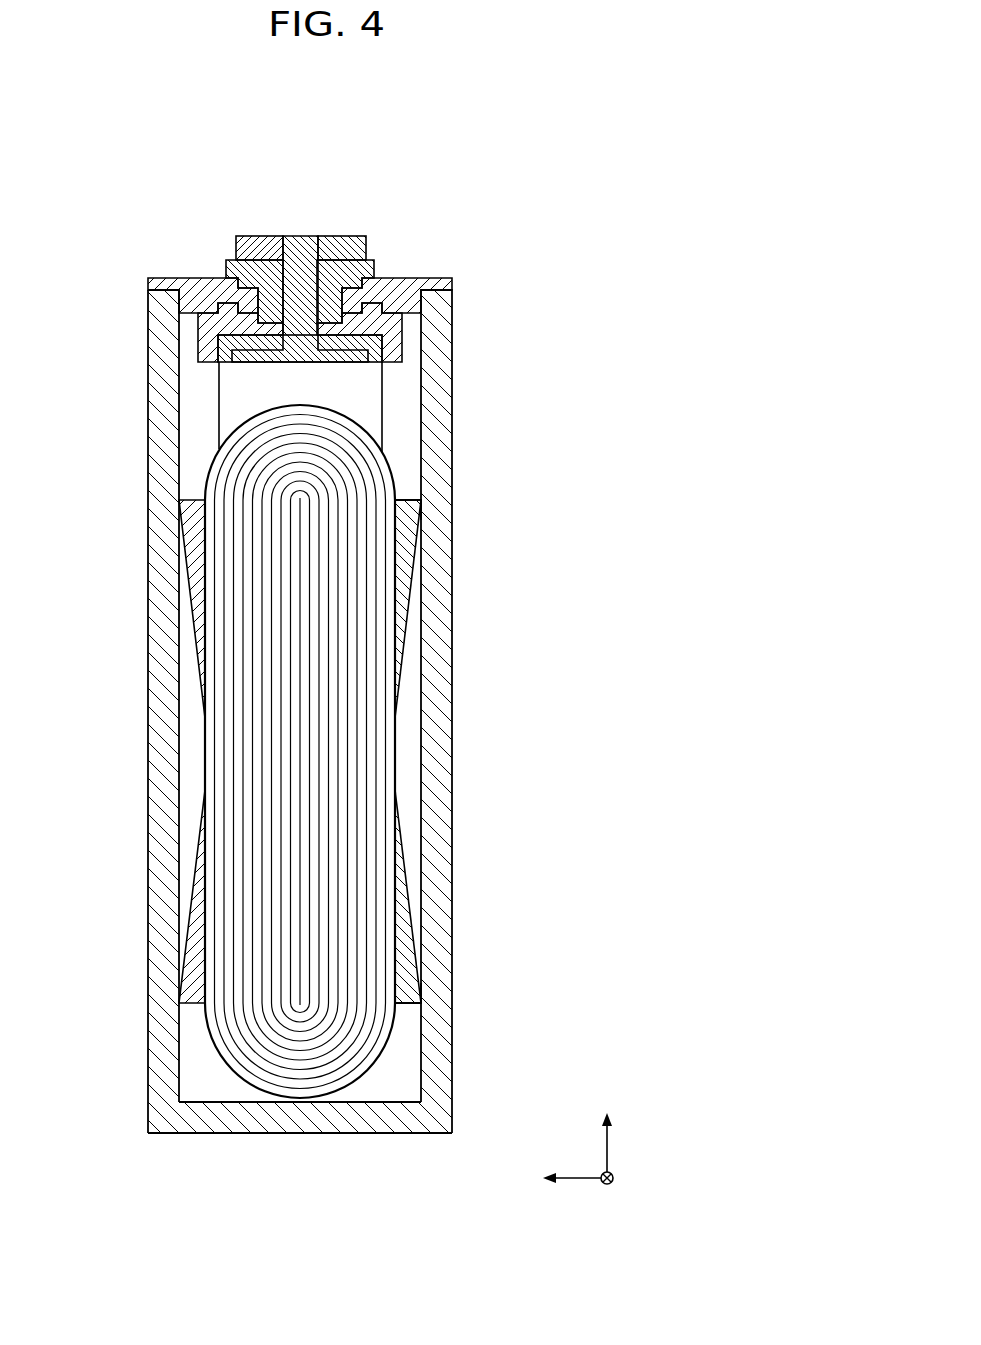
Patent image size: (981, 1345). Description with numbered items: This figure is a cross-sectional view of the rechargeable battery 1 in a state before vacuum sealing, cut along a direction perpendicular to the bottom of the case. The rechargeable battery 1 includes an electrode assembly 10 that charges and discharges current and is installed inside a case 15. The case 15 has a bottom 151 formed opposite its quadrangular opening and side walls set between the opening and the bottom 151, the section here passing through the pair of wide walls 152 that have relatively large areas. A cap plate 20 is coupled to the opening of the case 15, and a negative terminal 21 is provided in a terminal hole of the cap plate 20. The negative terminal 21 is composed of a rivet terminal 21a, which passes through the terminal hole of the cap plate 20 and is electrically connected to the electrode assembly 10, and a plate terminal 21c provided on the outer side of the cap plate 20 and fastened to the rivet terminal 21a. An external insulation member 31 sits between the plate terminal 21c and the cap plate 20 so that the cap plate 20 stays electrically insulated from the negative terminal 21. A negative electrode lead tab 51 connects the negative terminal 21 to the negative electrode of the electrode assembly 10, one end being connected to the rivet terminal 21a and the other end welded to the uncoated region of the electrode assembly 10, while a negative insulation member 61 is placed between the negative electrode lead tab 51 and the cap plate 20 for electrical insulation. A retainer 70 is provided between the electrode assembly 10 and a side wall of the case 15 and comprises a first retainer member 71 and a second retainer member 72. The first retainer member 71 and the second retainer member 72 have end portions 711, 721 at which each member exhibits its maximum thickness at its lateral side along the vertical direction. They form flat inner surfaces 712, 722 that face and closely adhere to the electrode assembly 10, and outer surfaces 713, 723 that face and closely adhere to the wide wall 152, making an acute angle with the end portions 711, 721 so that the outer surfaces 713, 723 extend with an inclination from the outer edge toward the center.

The rechargeable battery 1 is at (310, 100).
The electrode assembly 10 is at (300, 940).
The case 15 is at (660, 334).
The bottom 151 is at (362, 1120).
The wide walls 152 is at (452, 750).
The cap plate 20 is at (403, 297).
The negative terminal 21 is at (253, 200).
The rivet terminal 21a is at (298, 236).
The plate terminal 21c is at (345, 238).
The external insulation member 31 is at (372, 272).
The negative electrode lead tab 51 is at (227, 352).
The negative insulation member 61 is at (393, 345).
The retainer 70 is at (660, 223).
The first retainer member 71 is at (573, 470).
The end portion 711 is at (422, 462).
The inner surface 712 is at (400, 602).
The outer surface 713 is at (410, 643).
The second retainer member 72 is at (575, 1022).
The end portion 721 is at (411, 1003).
The inner surface 722 is at (398, 947).
The outer surface 723 is at (413, 867).